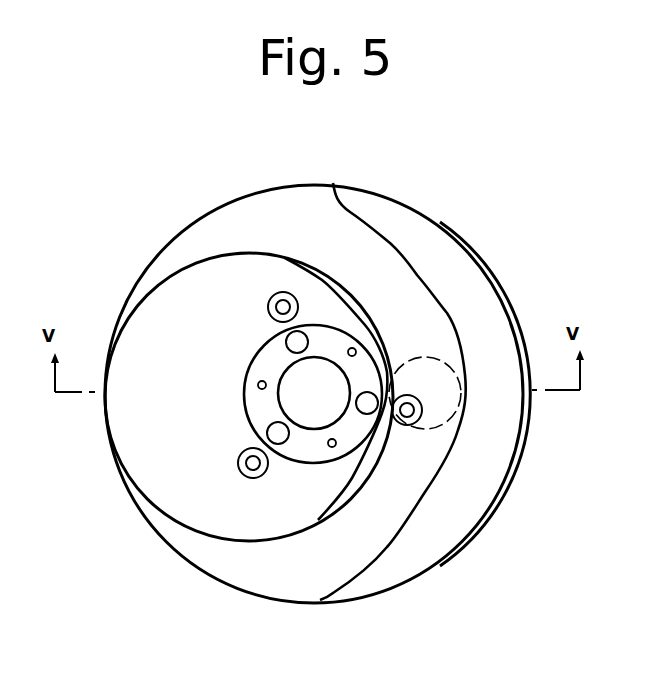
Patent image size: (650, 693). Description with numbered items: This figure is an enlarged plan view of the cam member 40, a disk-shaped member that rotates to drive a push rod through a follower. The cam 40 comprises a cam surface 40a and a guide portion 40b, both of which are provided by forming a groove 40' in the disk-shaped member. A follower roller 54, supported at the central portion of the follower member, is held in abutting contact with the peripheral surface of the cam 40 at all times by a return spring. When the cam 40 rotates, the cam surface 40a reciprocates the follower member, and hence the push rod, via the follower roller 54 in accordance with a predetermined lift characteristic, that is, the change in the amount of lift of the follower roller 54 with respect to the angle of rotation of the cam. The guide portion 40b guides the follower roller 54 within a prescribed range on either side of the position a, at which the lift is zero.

The cam member 40 is at (314, 380).
The cam surface 40a is at (218, 543).
The guide portion 40b is at (497, 469).
The groove 40' is at (358, 416).
The follower roller 54 is at (418, 362).
The position a is at (380, 388).